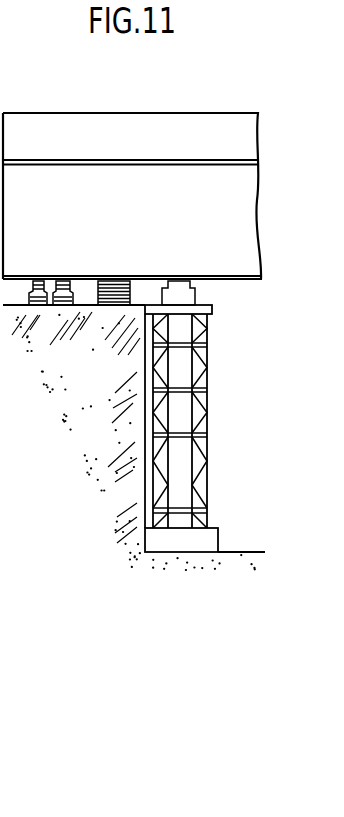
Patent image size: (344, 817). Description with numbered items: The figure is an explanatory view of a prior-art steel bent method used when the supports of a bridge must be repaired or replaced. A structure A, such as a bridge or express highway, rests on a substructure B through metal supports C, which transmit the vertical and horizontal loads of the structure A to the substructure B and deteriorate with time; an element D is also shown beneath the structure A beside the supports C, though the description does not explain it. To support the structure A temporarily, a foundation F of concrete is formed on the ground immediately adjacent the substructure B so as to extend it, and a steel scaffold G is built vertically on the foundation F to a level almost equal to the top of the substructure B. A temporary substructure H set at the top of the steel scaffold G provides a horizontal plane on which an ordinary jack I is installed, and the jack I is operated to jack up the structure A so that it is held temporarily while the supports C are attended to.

The structure A is at (192, 112).
The substructure B is at (134, 437).
The supports C is at (50, 288).
The laminated rubber isolator D is at (112, 286).
The foundation F is at (212, 543).
The steel scaffold G is at (208, 404).
The temporary substructure H is at (212, 311).
The jack I is at (180, 288).